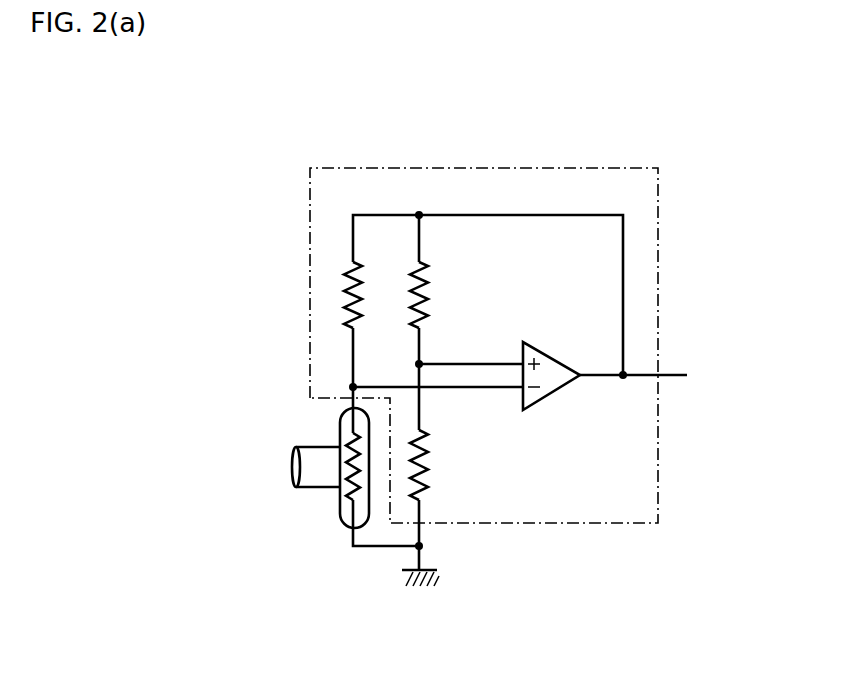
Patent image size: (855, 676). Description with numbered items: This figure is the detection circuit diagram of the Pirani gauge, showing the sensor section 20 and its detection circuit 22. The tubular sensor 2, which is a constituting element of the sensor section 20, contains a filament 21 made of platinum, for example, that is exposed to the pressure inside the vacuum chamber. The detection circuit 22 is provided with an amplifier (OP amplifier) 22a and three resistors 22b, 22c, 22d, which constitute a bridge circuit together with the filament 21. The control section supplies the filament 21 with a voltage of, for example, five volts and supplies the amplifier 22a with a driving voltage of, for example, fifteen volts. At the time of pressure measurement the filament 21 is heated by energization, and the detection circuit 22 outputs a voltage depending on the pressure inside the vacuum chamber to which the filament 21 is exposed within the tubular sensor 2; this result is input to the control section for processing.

The tubular sensor 2 is at (305, 446).
The sensor section 20 is at (523, 156).
The filament 21 is at (354, 495).
The detection circuit 22 is at (660, 229).
The amplifier (OP amplifier) 22a is at (561, 372).
The resistor 22b is at (346, 293).
The resistor 22c is at (427, 299).
The resistor 22d is at (427, 483).